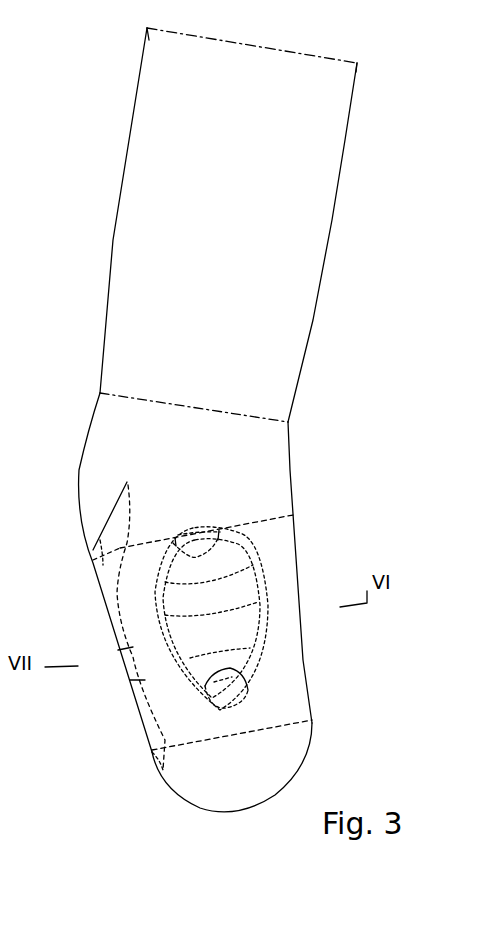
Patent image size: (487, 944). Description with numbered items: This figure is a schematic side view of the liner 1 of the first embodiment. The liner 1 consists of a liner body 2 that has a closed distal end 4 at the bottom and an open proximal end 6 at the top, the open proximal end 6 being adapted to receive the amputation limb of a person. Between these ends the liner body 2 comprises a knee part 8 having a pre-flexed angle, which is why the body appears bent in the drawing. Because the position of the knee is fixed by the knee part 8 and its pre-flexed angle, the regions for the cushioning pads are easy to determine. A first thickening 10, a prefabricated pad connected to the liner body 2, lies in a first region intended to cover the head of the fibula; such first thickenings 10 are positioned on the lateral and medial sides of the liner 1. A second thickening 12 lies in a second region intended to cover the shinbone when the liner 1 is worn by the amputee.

The liner 1 is at (390, 293).
The liner body 2 is at (320, 208).
The closed distal end 4 is at (287, 772).
The open proximal end 6 is at (290, 52).
The knee part 8 is at (115, 451).
The first thickening 10 is at (240, 593).
The second thickening 12 is at (93, 565).